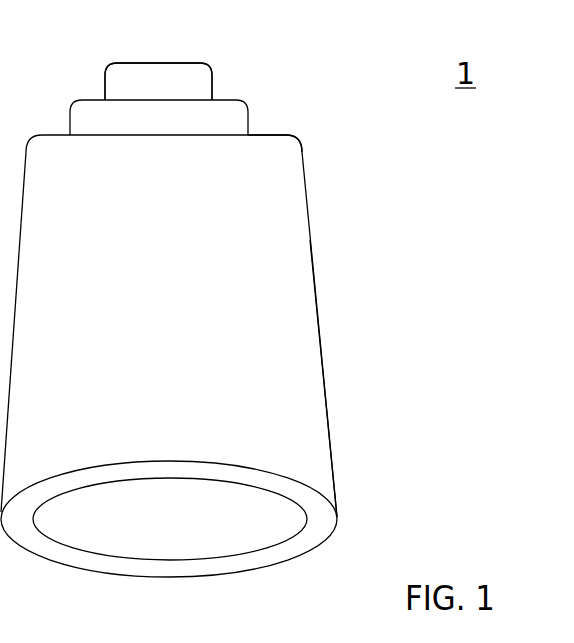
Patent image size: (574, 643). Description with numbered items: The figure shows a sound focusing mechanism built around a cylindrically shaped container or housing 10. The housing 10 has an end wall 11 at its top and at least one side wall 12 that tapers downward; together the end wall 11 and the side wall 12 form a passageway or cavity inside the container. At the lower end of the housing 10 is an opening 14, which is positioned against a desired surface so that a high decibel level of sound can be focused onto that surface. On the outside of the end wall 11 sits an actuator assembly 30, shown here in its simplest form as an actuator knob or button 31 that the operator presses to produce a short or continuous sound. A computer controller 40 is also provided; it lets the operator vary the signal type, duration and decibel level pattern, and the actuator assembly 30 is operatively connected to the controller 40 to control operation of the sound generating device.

The housing 10 is at (282, 270).
The end wall 11 is at (273, 135).
The side wall 12 is at (300, 407).
The opening 14 is at (163, 540).
The actuator assembly 30 is at (182, 52).
The actuator knob or button 31 is at (132, 78).
The computer controller 40 is at (210, 117).